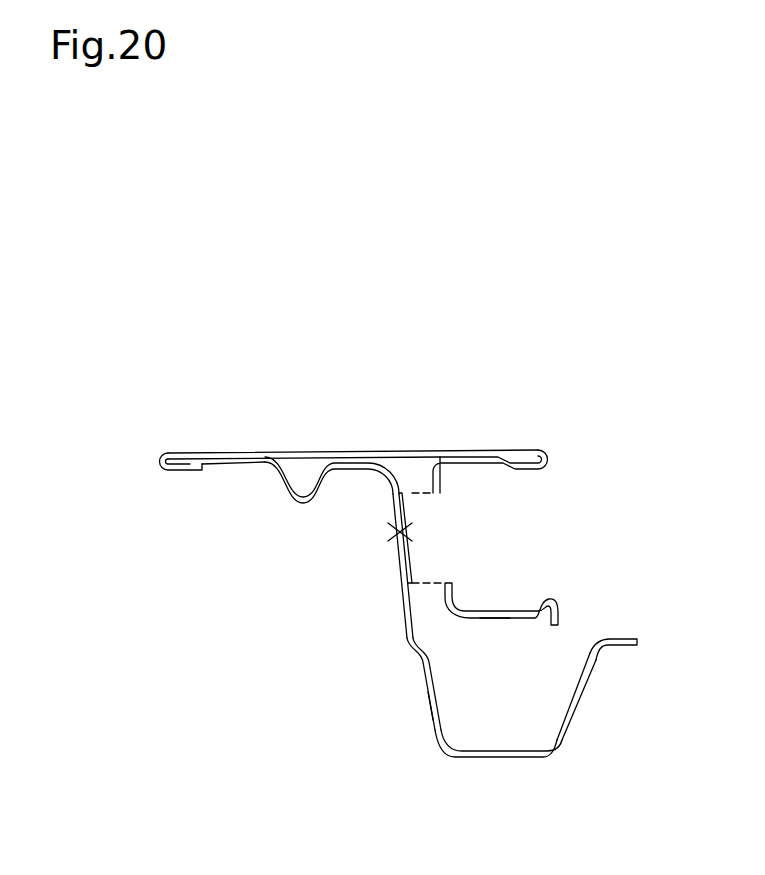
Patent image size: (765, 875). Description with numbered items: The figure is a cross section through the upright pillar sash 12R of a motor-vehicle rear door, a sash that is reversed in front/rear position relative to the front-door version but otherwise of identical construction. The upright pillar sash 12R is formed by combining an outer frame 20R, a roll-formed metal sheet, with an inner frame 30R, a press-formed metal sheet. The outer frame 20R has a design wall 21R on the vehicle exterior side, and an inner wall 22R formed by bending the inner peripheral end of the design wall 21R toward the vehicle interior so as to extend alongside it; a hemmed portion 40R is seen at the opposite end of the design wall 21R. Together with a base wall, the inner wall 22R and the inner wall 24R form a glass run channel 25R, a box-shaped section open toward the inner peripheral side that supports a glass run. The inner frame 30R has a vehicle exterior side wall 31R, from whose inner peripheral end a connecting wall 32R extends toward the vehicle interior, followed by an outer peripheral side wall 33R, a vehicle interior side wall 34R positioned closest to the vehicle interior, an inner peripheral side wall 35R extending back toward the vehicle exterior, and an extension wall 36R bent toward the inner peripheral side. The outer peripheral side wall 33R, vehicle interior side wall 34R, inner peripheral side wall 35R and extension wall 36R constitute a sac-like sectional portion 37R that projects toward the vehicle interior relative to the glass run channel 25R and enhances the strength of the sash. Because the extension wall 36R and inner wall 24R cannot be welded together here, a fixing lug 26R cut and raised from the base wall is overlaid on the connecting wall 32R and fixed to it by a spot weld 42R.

The upright pillar sash 12R is at (175, 426).
The outer frame 20R is at (270, 440).
The design wall 21R is at (322, 451).
The inner wall 22R is at (480, 462).
The inner wall 24R is at (518, 613).
The glass run channel 25R is at (495, 629).
The fixing lug 26R is at (402, 511).
The inner frame 30R is at (254, 478).
The vehicle exterior side wall 31R is at (220, 466).
The connecting wall 32R is at (403, 577).
The outer peripheral side wall 33R is at (424, 688).
The vehicle interior side wall 34R is at (493, 757).
The inner peripheral side wall 35R is at (582, 692).
The extension wall 36R is at (625, 639).
The sac-like sectional portion 37R is at (418, 717).
The hemmed portion 40R is at (186, 471).
The spot weld 42R is at (395, 532).